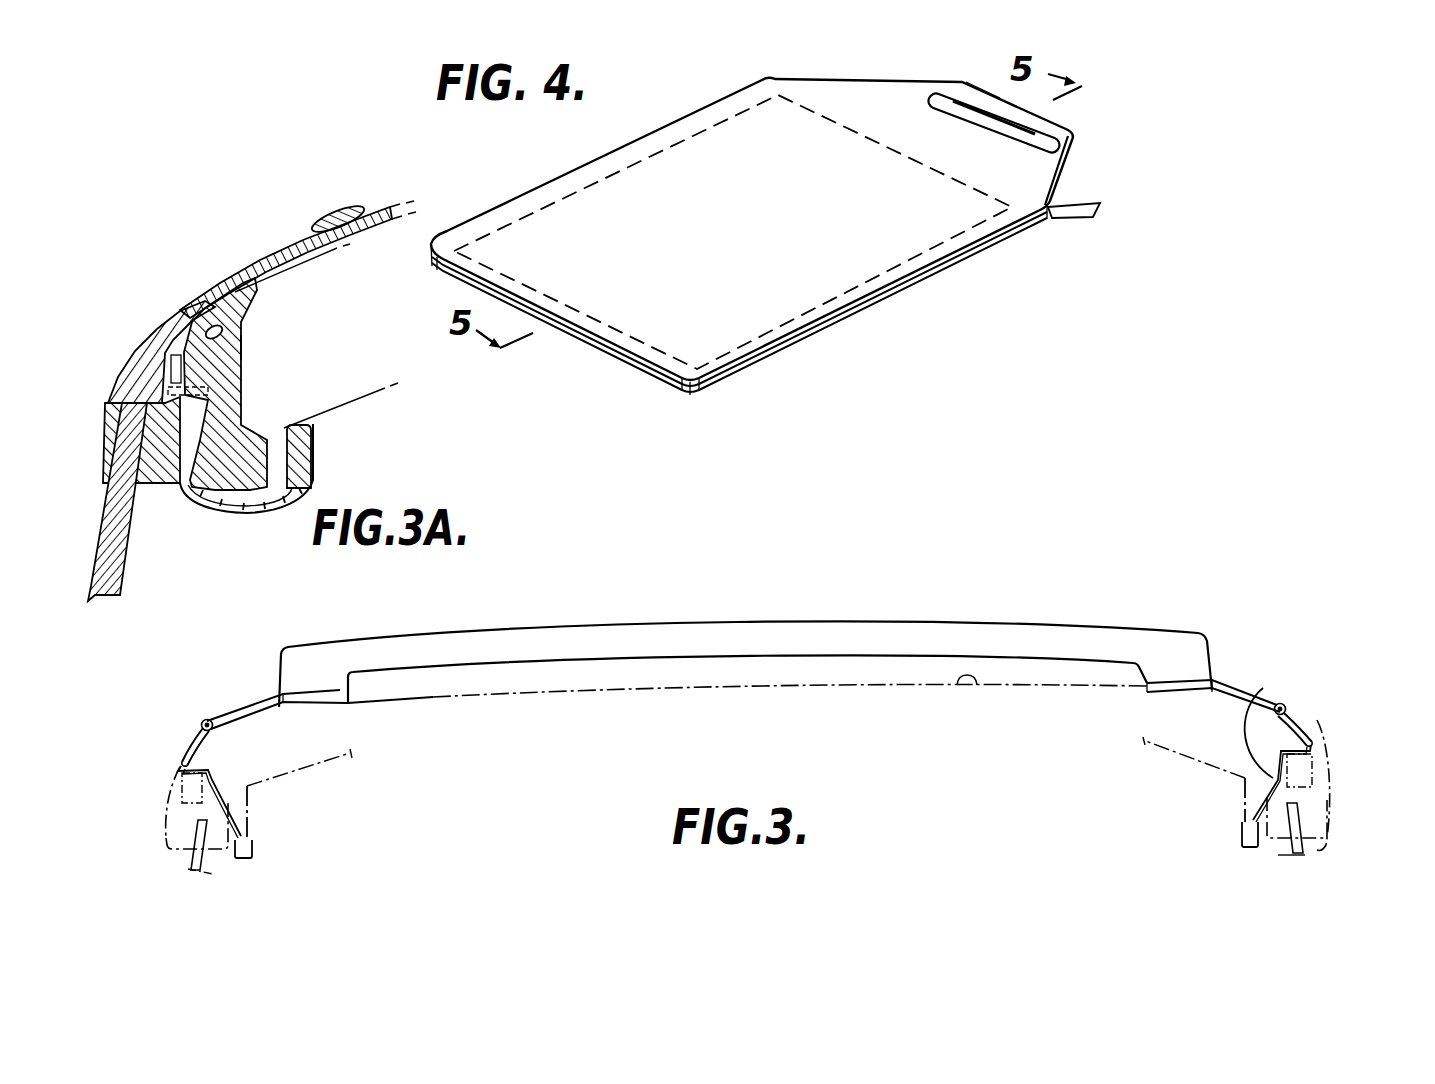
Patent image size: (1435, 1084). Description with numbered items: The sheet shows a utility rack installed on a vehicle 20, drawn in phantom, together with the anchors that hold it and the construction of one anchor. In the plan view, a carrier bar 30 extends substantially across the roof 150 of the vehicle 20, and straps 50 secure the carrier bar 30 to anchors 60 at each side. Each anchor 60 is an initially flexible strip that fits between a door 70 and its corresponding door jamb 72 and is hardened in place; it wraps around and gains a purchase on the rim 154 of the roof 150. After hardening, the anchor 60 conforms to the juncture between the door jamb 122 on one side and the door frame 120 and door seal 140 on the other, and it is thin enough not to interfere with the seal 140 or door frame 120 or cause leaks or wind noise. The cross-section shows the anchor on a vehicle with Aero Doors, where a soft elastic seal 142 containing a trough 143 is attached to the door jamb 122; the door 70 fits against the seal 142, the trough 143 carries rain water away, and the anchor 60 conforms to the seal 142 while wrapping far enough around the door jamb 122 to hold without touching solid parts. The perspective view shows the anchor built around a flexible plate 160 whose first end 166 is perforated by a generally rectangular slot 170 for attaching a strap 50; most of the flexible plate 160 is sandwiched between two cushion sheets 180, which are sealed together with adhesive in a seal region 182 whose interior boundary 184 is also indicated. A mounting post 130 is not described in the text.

In FIG. 3, the vehicle 20 is at (1001, 678).
In FIG. 3, the carrier bar 30 is at (750, 630).
In FIG. 3, the strap 50 is at (243, 705).
In FIG. 4, the anchor 60 is at (996, 264).
In FIG. 3A, the anchor 60 is at (258, 262).
In FIG. 3, the anchor 60 is at (185, 737).
In FIG. 3A, the door 70 is at (92, 418).
In FIG. 3, the door 70 is at (167, 829).
In FIG. 3A, the door jamb 72 is at (198, 483).
In FIG. 3, the door jamb 72 is at (227, 813).
In FIG. 3A, the door frame 120 is at (138, 340).
In FIG. 3, the door frame 120 is at (173, 813).
In FIG. 3A, the door jamb 122 is at (241, 377).
In FIG. 3, the door jamb 122 is at (1262, 692).
In FIG. 3, the mounting post 130 is at (193, 858).
In FIG. 3, the door seal 140 is at (178, 773).
In FIG. 3A, the seal 142 is at (250, 345).
In FIG. 3A, the trough 143 is at (223, 330).
In FIG. 3A, the roof 150 is at (371, 293).
In FIG. 3, the roof 150 is at (958, 684).
In FIG. 3, the rim 154 is at (184, 767).
In FIG. 4, the flexible plate 160 is at (1047, 164).
In FIG. 4, the first end 166 is at (973, 83).
In FIG. 4, the slot 170 is at (1047, 121).
In FIG. 4, the cushion sheets 180 is at (1092, 208).
In FIG. 4, the seal region 182 is at (848, 306).
In FIG. 4, the interior boundary of the seal 184 is at (906, 276).